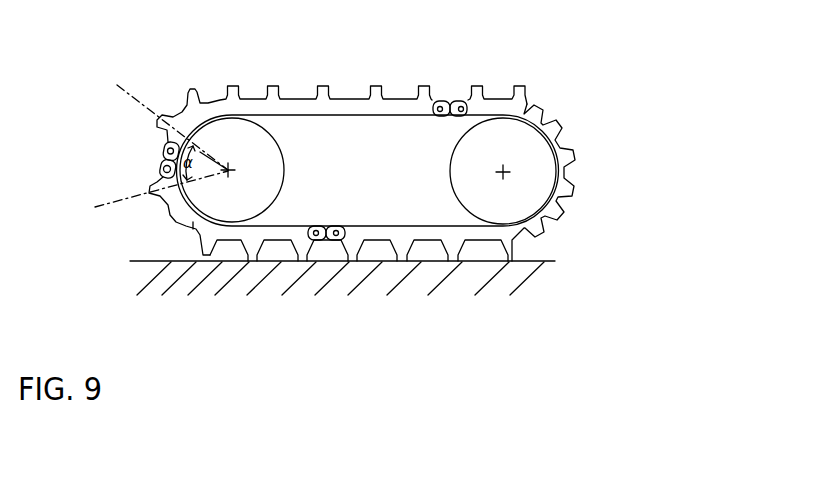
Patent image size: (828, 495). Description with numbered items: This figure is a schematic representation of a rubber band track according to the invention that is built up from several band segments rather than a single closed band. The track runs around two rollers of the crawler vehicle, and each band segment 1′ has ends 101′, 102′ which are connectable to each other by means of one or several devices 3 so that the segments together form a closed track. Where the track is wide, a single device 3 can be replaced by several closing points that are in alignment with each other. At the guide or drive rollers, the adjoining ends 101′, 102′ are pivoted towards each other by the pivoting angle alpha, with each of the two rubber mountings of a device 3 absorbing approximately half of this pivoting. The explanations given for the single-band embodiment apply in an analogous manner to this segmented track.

The band segment 1′ is at (253, 107).
The device 3 is at (455, 93).
The end of band segment 101′ is at (162, 143).
The end of band segment 102′ is at (162, 170).